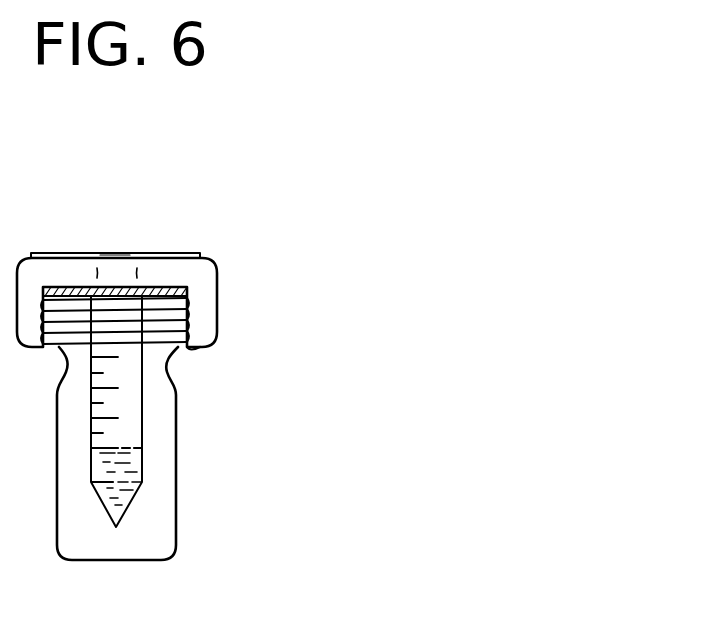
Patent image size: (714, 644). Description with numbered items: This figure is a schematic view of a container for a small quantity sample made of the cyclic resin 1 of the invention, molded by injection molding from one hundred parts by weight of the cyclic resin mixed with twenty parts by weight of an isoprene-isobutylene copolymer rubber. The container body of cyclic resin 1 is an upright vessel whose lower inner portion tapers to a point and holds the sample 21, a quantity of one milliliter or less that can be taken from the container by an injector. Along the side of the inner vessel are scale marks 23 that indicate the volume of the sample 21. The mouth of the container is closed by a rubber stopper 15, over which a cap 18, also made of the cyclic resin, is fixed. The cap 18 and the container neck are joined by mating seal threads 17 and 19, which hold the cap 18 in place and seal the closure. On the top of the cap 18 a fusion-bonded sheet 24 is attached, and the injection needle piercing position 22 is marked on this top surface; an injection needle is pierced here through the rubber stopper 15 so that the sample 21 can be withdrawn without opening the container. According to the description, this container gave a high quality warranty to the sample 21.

The cyclic resin 1 is at (167, 435).
The rubber stopper 15 is at (147, 283).
The seal thread 17 is at (187, 331).
The cap 18 is at (195, 270).
The seal thread 19 is at (200, 344).
The sample 21 is at (142, 481).
The injection needle piercing position 22 is at (116, 248).
The scale mark 23 is at (100, 415).
The fusion-bonded sheet 24 is at (68, 253).